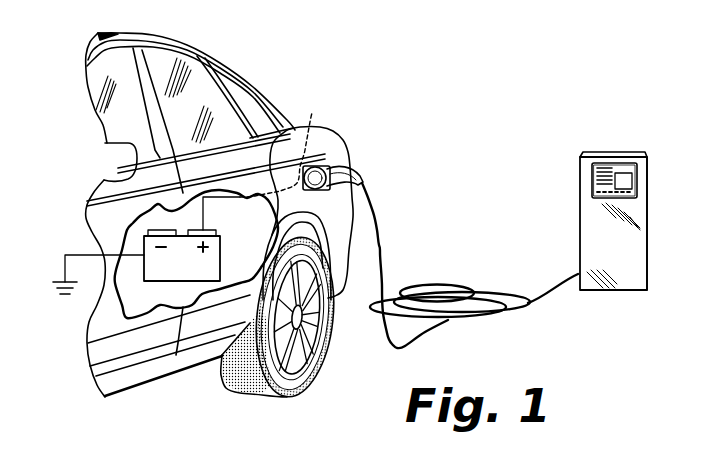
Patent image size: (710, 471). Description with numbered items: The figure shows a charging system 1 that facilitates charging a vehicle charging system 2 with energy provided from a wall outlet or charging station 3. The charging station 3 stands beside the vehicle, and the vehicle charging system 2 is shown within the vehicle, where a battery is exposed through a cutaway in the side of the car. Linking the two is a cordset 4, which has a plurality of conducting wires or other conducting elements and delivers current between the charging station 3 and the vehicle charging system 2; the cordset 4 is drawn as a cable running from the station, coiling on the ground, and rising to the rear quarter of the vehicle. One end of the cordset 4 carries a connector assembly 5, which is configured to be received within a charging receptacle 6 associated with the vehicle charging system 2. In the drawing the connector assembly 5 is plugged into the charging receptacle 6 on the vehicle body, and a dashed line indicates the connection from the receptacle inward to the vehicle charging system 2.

The charging system 1 is at (383, 46).
The vehicle charging system 2 is at (188, 273).
The charging station 3 is at (617, 257).
The cordset 4 is at (448, 290).
The connector assembly 5 is at (338, 157).
The charging receptacle 6 is at (276, 144).